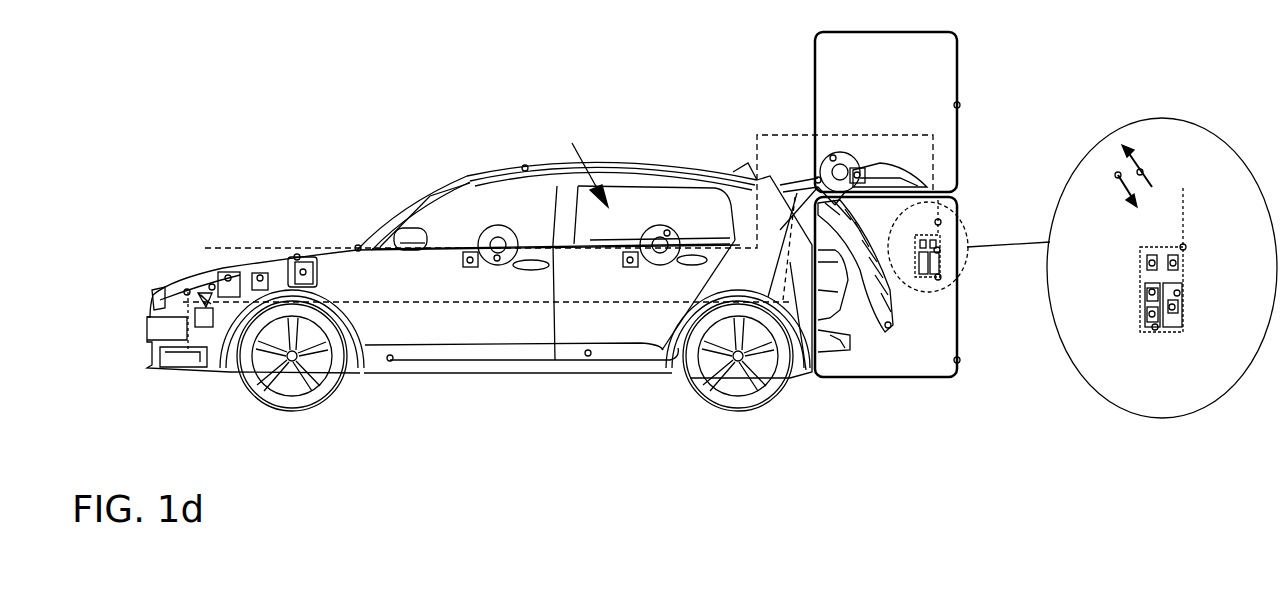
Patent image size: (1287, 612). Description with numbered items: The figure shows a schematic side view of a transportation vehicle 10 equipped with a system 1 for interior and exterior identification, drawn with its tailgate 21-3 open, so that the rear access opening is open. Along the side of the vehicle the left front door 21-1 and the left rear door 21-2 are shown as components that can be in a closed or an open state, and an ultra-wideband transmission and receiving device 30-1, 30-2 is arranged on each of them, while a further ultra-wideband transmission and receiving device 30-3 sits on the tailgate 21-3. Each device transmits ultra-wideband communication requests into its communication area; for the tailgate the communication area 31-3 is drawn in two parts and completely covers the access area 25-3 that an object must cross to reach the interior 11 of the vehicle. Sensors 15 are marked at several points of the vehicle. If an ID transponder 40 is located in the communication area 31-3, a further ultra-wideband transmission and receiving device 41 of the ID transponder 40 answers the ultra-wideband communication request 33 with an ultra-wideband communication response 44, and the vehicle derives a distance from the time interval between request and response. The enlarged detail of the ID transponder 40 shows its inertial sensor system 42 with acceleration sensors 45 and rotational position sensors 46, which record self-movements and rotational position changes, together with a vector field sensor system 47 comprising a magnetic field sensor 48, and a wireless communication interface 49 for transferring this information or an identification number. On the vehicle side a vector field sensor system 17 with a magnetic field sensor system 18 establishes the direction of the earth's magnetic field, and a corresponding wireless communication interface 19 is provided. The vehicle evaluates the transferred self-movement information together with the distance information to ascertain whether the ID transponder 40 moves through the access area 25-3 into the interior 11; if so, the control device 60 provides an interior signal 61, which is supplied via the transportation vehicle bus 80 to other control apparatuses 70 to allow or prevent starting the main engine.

The system for interior and exterior identification 1 is at (358, 248).
The transportation vehicle 10 is at (525, 168).
The interior 11 is at (578, 158).
The sensor 15 is at (470, 252).
The vector field sensor system 17 is at (297, 257).
The magnetic field sensor system 18 is at (303, 272).
The wireless communication interface 19 is at (260, 278).
The left front door 21-1 is at (390, 358).
The left rear door 21-2 is at (588, 353).
The tailgate 21-3 is at (818, 180).
The access area 25-3 is at (888, 325).
The ultra-wideband transmission and receiving device 30-1 is at (497, 258).
The ultra-wideband transmission and receiving device 30-2 is at (667, 233).
The ultra-wideband transmission and receiving device 30-3 is at (833, 158).
The communication area 31-3 is at (957, 105).
The ultra-wideband communication request 33 is at (1118, 175).
The ID transponder 40 is at (938, 277).
The further ultra-wideband transmission and receiving device 41 is at (938, 222).
The inertial sensor system 42 is at (937, 250).
The ultra-wideband communication response 44 is at (1140, 172).
The acceleration sensors 45 is at (1152, 292).
The rotational position sensors 46 is at (1152, 314).
The vector field sensor system 47 is at (1177, 293).
The magnetic field sensor 48 is at (1172, 307).
The wireless communication interface 49 is at (1152, 263).
The control device 60 is at (228, 278).
The interior signal 61 is at (212, 287).
The control apparatuses 70 is at (202, 327).
The transportation vehicle bus 80 is at (187, 292).